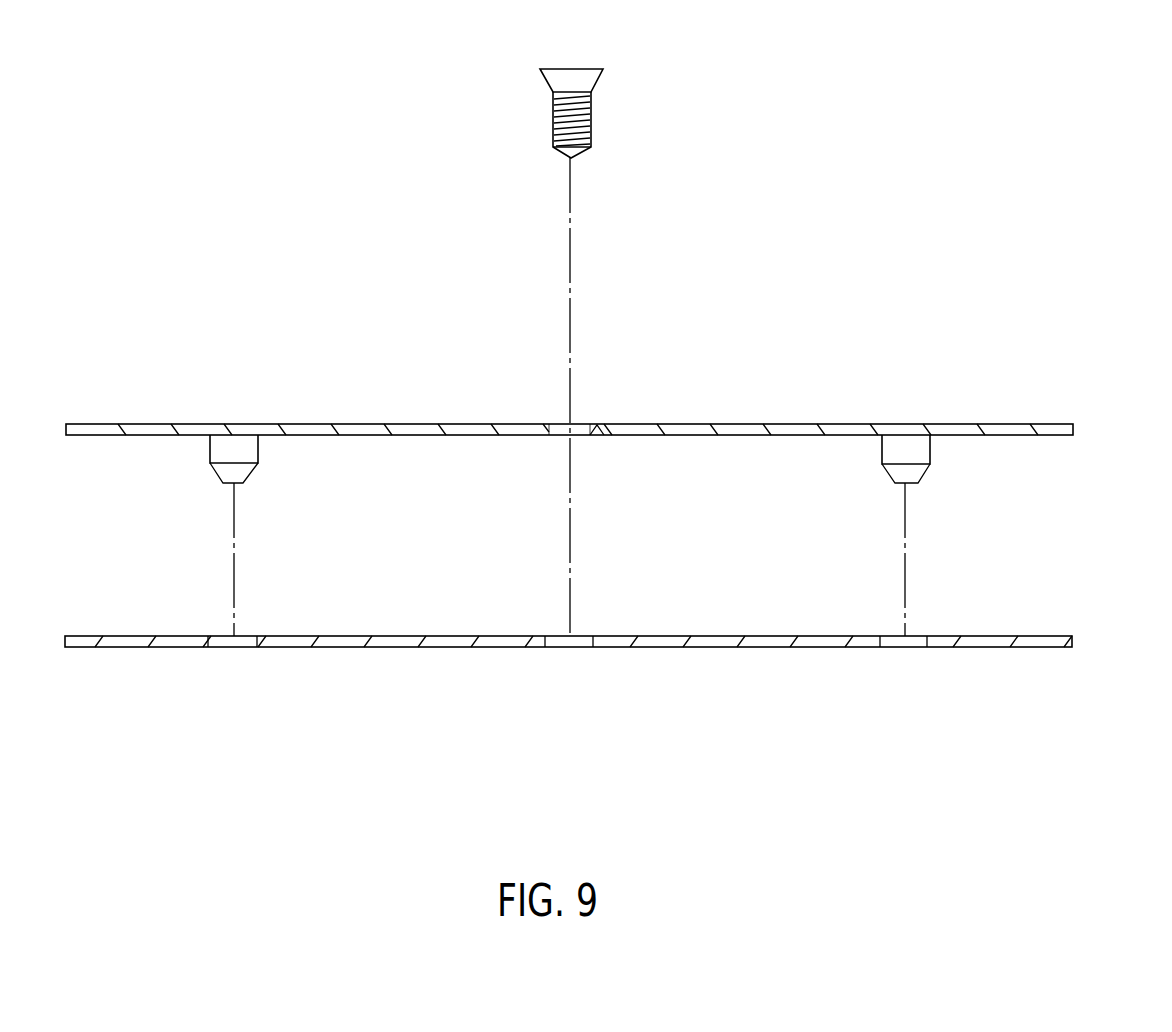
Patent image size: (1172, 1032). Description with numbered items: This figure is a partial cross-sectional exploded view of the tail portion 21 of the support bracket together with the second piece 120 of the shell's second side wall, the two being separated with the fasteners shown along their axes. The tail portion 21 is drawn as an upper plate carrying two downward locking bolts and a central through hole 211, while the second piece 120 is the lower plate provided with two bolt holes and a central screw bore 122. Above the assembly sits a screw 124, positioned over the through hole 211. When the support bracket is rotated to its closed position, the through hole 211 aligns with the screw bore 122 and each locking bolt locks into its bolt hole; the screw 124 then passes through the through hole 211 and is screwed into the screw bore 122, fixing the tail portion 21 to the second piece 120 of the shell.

The tail portion 21 is at (1052, 433).
The through hole 211 is at (582, 425).
The screw 124 is at (590, 128).
The second piece 120 is at (978, 648).
The screw bore 122 is at (578, 647).